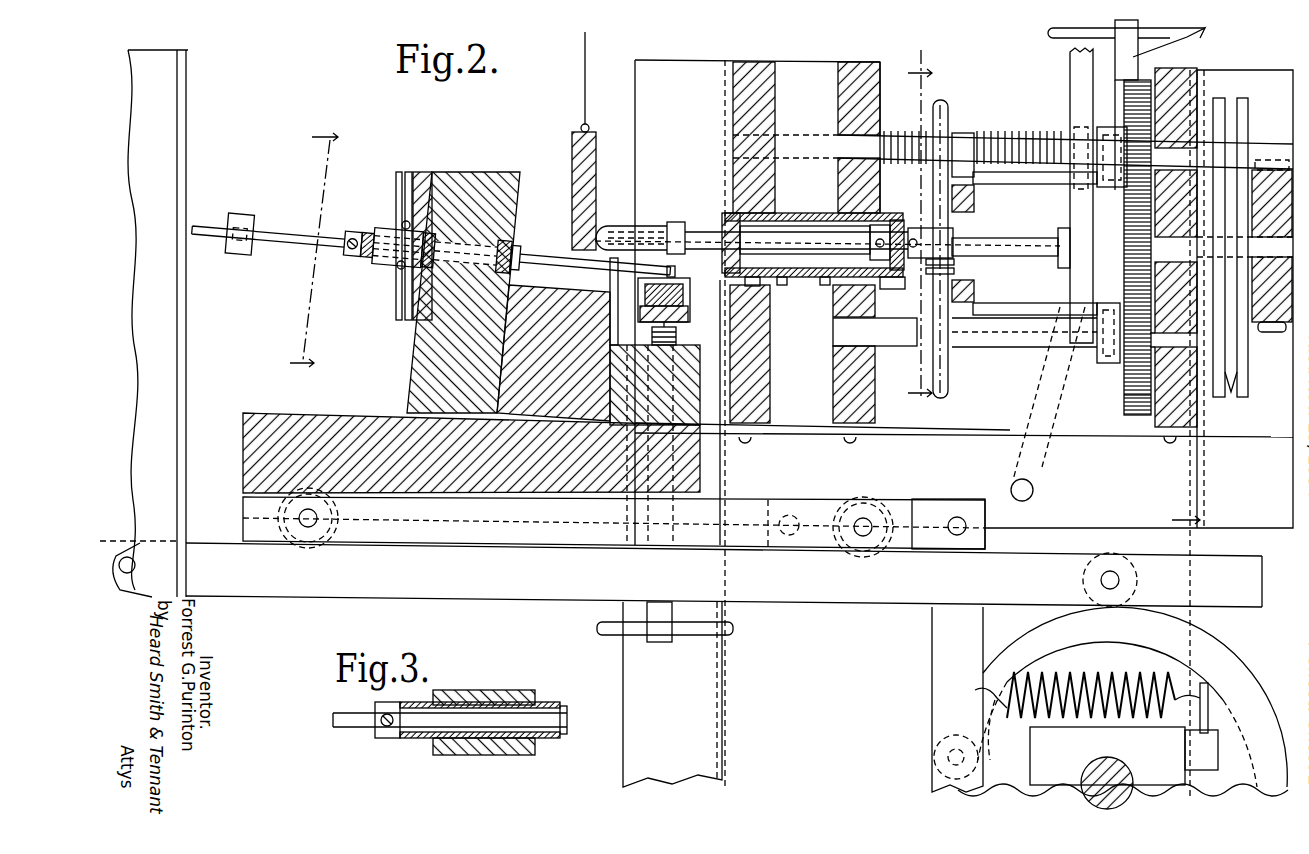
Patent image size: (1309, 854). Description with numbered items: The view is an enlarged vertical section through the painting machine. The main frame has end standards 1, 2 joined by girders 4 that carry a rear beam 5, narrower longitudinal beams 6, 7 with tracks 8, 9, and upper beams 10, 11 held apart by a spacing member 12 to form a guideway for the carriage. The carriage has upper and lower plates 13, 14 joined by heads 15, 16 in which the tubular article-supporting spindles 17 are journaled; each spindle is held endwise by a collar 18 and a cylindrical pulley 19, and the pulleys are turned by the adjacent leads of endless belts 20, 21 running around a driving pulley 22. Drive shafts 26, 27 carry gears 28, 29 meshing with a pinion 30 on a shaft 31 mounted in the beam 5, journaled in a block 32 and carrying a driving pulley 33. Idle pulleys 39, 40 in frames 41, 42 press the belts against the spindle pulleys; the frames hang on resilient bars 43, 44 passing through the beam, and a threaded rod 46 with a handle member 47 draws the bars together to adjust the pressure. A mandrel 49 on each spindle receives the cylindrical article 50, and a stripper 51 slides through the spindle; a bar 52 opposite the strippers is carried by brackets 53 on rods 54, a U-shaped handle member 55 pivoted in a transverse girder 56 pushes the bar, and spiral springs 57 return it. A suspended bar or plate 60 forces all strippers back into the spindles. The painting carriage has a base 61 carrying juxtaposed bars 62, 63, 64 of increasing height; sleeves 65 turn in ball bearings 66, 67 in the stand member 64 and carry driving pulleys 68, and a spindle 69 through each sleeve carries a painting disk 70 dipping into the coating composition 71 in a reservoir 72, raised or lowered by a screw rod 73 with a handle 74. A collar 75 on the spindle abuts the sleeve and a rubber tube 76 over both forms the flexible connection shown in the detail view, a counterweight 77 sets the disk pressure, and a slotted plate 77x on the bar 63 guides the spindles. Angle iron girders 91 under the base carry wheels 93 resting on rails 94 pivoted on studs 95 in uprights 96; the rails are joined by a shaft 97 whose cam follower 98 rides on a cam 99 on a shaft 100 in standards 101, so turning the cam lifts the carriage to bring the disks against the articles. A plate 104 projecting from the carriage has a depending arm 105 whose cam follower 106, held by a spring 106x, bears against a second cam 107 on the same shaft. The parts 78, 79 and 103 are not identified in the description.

In FIG. 2, the end standard 1 is at (1240, 420).
In FIG. 2, the end standard 2 is at (710, 714).
In FIG. 2, the girder 4 is at (1195, 514).
In FIG. 2, the rear beam 5 is at (1142, 452).
In FIG. 2, the longitudinal beam 6 is at (875, 378).
In FIG. 2, the longitudinal beam 7 is at (770, 385).
In FIG. 2, the track 8 is at (762, 280).
In FIG. 2, the track 9 is at (886, 280).
In FIG. 2, the parallel beam 10 is at (770, 76).
In FIG. 2, the parallel beam 11 is at (876, 118).
In FIG. 2, the spacing member 12 is at (830, 72).
In FIG. 2, the upper plate 13 is at (800, 278).
In FIG. 2, the lower plate 14 is at (800, 213).
In FIG. 2, the head 15 is at (717, 213).
In FIG. 2, the head 16 is at (893, 236).
In FIG. 2, the article-supporting spindle 17 is at (765, 232).
In FIG. 2, the collar 18 is at (884, 226).
In FIG. 2, the pulley 19 is at (907, 258).
In FIG. 2, the endless belt 20 is at (950, 208).
In FIG. 2, the endless belt 21 is at (955, 271).
In FIG. 2, the driving pulley 22 is at (948, 117).
In FIG. 2, the drive shaft 26 is at (844, 147).
In FIG. 2, the drive shaft 27 is at (840, 332).
In FIG. 2, the gear 28 is at (1146, 80).
In FIG. 2, the gear 29 is at (1124, 398).
In FIG. 2, the pinion 30 is at (1125, 246).
In FIG. 2, the shaft 31 is at (1085, 251).
In FIG. 2, the block or plate 32 is at (1270, 176).
In FIG. 2, the driving pulley 33 is at (1240, 122).
In FIG. 2, the idle pulley 39 is at (1003, 224).
In FIG. 2, the idle pulley 40 is at (955, 262).
In FIG. 2, the frame 41 is at (974, 200).
In FIG. 2, the frame 42 is at (975, 293).
In FIG. 2, the resilient bar 43 is at (1035, 184).
In FIG. 2, the resilient bar 44 is at (1012, 313).
In FIG. 2, the rod 46 is at (1198, 33).
In FIG. 2, the handle member 47 is at (1052, 32).
In FIG. 2, the mandrel 49 is at (651, 240).
In FIG. 2, the cylindrical article 50 is at (612, 226).
In FIG. 2, the stripper 51 is at (1013, 262).
In FIG. 2, the bar 52 is at (1058, 262).
In FIG. 2, the bracket 53 is at (1100, 186).
In FIG. 2, the rod 54 is at (1050, 133).
In FIG. 2, the U-shaped handle member 55 is at (1070, 61).
In FIG. 2, the transverse girder 56 is at (996, 436).
In FIG. 2, the spiral spring 57 is at (1012, 133).
In FIG. 2, the bar or plate 60 is at (572, 164).
In FIG. 2, the base 61 is at (395, 427).
In FIG. 2, the bar 62 is at (693, 405).
In FIG. 2, the bar 63 is at (521, 292).
In FIG. 2, the stand member 64 is at (417, 362).
In FIG. 2, the sleeve 65 is at (478, 243).
In FIG. 3, the sleeve 65 is at (561, 712).
In FIG. 2, the ball bearing 66 is at (514, 241).
In FIG. 2, the ball bearing 67 is at (440, 228).
In FIG. 2, the driving pulley 68 is at (387, 228).
In FIG. 3, the driving pulley 68 is at (490, 690).
In FIG. 2, the spindle 69 is at (287, 234).
In FIG. 3, the spindle 69 is at (565, 728).
In FIG. 2, the painting disk 70 is at (676, 269).
In FIG. 2, the coating composition 71 is at (682, 291).
In FIG. 2, the reservoir 72 is at (690, 308).
In FIG. 2, the screw threaded rod 73 is at (678, 338).
In FIG. 2, the handle 74 is at (660, 634).
In FIG. 2, the collar 75 is at (347, 248).
In FIG. 3, the collar 75 is at (376, 735).
In FIG. 2, the rubber tube 76 is at (353, 232).
In FIG. 3, the rubber tube 76 is at (406, 740).
In FIG. 2, the counterweight 77 is at (240, 213).
In FIG. 2, the plate 77x is at (612, 283).
In FIG. 2, the screw 78 is at (403, 224).
In FIG. 2, the screw 79 is at (398, 266).
In FIG. 2, the angle iron girder 91 is at (540, 533).
In FIG. 2, the wheel 93 is at (322, 546).
In FIG. 2, the rail 94 is at (316, 584).
In FIG. 2, the stud 95 is at (138, 564).
In FIG. 2, the upright 96 is at (170, 373).
In FIG. 2, the bar or shaft 97 is at (1113, 574).
In FIG. 2, the cam follower 98 is at (1122, 578).
In FIG. 2, the cam 99 is at (1022, 646).
In FIG. 2, the shaft 100 is at (1125, 773).
In FIG. 2, the standard 101 is at (1040, 790).
In FIG. 2, the block 103 is at (960, 512).
In FIG. 2, the plate or bar 104 is at (835, 506).
In FIG. 2, the arm 105 is at (932, 634).
In FIG. 2, the cam follower 106 is at (936, 771).
In FIG. 2, the spring 106x is at (1110, 682).
In FIG. 2, the cam 107 is at (997, 733).